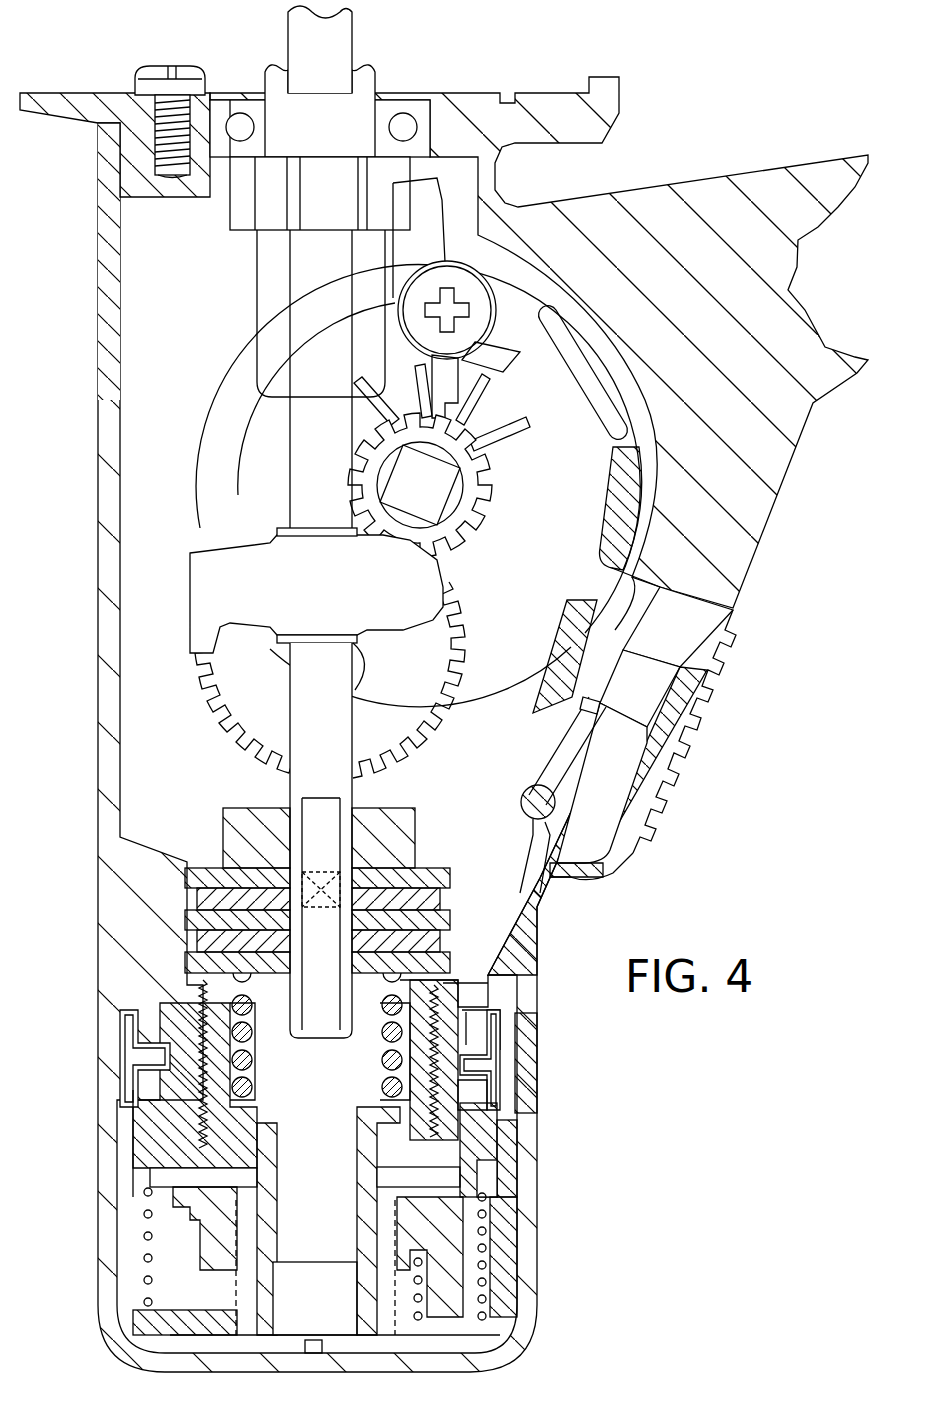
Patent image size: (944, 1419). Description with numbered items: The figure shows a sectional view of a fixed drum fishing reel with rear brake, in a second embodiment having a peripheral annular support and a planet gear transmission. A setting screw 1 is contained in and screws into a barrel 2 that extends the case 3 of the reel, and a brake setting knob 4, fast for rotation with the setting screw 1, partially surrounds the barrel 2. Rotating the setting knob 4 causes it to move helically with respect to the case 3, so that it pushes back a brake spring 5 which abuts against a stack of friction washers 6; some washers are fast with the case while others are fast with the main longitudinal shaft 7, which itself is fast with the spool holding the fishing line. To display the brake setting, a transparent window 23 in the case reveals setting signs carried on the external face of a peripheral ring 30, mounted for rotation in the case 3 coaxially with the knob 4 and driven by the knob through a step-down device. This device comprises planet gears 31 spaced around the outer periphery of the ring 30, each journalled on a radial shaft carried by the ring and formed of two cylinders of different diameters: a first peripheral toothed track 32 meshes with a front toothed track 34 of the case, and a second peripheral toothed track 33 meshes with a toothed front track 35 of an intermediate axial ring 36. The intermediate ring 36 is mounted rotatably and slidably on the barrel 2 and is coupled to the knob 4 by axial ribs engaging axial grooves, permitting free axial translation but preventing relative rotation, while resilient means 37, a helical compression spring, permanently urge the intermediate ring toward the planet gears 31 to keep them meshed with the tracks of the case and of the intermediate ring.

The setting screw 1 is at (200, 1063).
The barrel 2 is at (187, 1207).
The case 3 is at (524, 934).
The brake setting knob 4 is at (490, 1330).
The brake spring 5 is at (248, 993).
The friction washers 6 is at (207, 900).
The main longitudinal shaft 7 is at (297, 717).
The transparent window 23 is at (530, 1027).
The peripheral ring 30 is at (508, 1102).
The planet gears 31 is at (478, 1010).
The first peripheral toothed track 32 is at (500, 1072).
The second peripheral toothed track 33 is at (460, 1100).
The front toothed track 34 is at (492, 1019).
The toothed front track 35 is at (480, 1150).
The intermediate axial ring 36 is at (490, 1195).
The resilient means 37 is at (490, 1253).